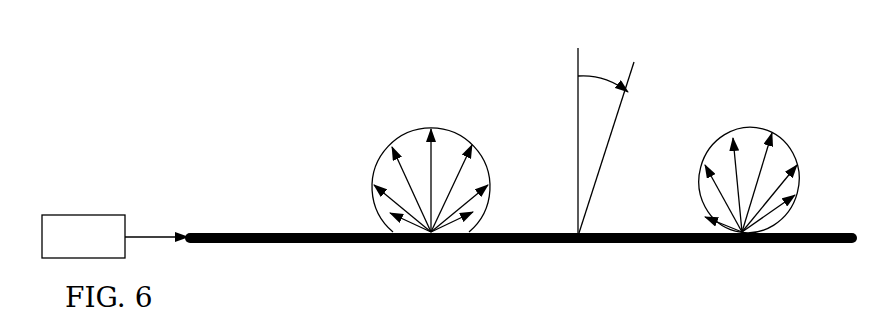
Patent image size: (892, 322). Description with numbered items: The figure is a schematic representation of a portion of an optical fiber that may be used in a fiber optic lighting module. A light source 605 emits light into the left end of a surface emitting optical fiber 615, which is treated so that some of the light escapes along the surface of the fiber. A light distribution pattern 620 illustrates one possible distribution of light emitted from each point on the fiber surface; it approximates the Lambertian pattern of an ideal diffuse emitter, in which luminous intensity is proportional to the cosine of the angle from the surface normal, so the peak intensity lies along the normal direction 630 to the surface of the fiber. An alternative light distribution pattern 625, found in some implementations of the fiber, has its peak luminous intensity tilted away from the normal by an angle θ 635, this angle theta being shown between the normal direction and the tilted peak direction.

The light source 605 is at (105, 215).
The surface emitting optical fiber 615 is at (313, 233).
The light distribution pattern 620 is at (418, 129).
The alternative light distribution pattern 625 is at (752, 128).
The normal direction 630 is at (578, 54).
The angle θ 635 is at (618, 124).
The angle θ theta is at (613, 78).